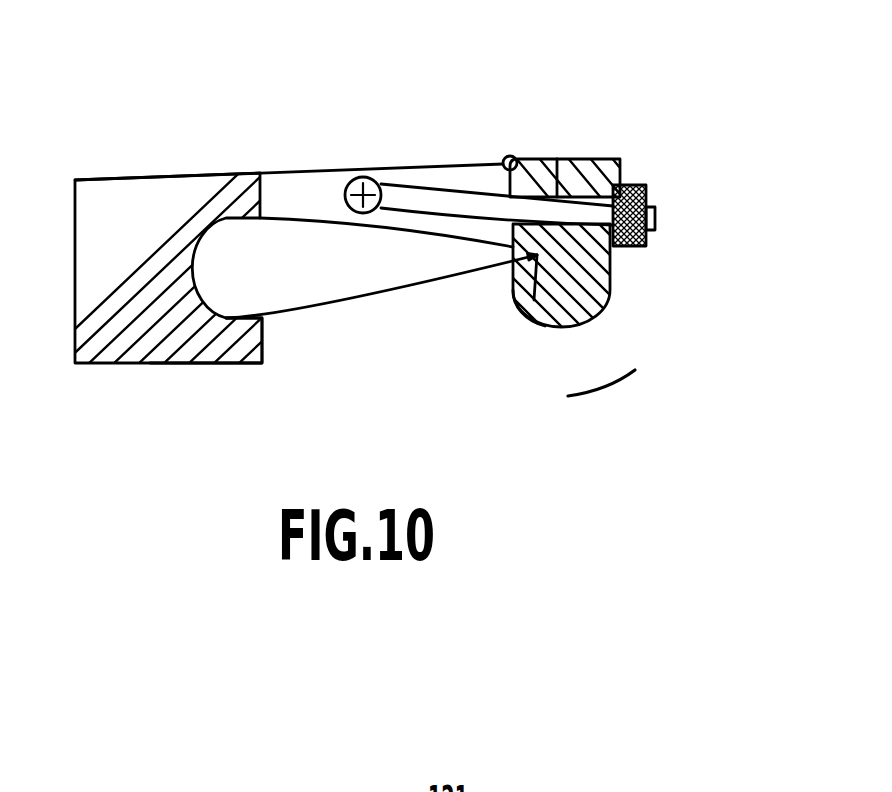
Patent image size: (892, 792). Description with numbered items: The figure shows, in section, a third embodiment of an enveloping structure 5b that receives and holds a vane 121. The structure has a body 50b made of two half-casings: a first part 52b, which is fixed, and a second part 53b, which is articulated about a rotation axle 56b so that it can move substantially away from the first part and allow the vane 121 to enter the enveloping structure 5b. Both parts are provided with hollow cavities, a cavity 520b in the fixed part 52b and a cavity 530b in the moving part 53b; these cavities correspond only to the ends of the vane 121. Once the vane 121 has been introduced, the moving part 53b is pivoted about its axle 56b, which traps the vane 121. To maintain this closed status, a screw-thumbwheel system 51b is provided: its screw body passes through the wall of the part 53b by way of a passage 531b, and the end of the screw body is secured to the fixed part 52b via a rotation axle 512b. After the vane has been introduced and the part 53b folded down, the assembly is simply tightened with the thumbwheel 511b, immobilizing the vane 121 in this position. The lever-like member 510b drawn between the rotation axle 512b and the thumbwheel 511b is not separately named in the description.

The first half-casing 52b is at (115, 213).
The hollow cavity 520b is at (182, 268).
The body 50b is at (300, 173).
The vane 121 is at (322, 280).
The rotation axle 512b is at (349, 166).
The lever arm 510b is at (422, 197).
The rotation axle 56b is at (505, 158).
The passage 531b is at (560, 163).
The enveloping structure 5b is at (633, 121).
The thumbwheel 511b is at (638, 186).
The screw-thumbwheel system 51b is at (680, 237).
The second half-casing 53b is at (603, 294).
The hollow cavity 530b is at (522, 295).